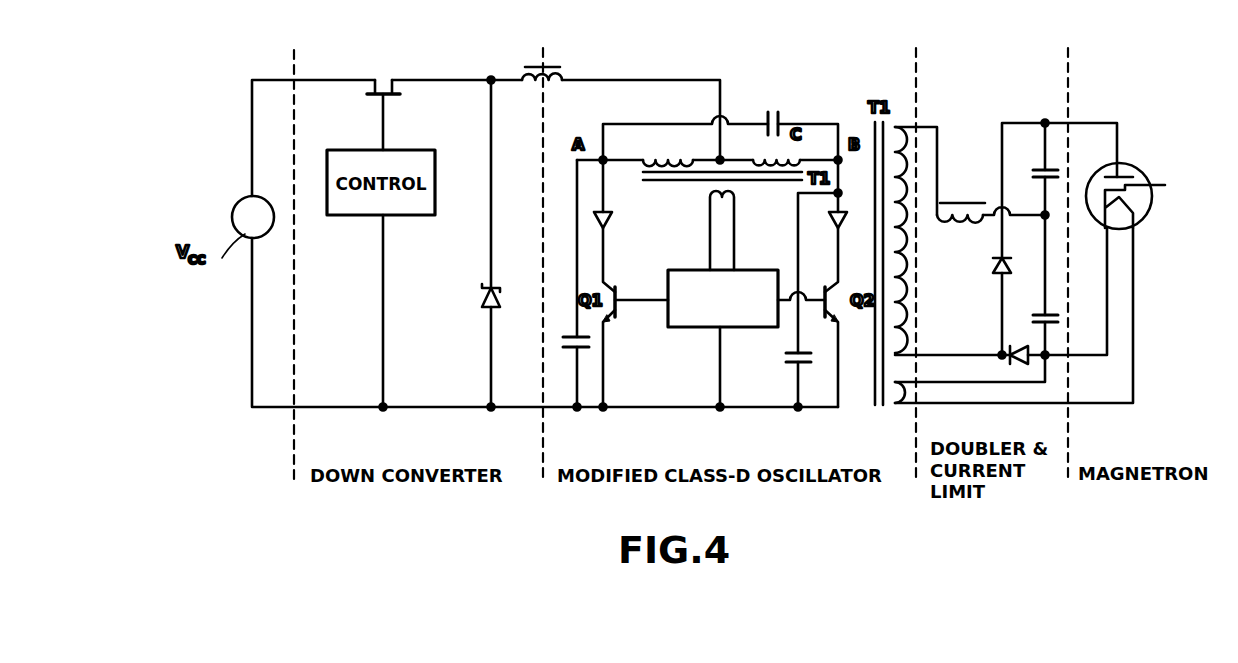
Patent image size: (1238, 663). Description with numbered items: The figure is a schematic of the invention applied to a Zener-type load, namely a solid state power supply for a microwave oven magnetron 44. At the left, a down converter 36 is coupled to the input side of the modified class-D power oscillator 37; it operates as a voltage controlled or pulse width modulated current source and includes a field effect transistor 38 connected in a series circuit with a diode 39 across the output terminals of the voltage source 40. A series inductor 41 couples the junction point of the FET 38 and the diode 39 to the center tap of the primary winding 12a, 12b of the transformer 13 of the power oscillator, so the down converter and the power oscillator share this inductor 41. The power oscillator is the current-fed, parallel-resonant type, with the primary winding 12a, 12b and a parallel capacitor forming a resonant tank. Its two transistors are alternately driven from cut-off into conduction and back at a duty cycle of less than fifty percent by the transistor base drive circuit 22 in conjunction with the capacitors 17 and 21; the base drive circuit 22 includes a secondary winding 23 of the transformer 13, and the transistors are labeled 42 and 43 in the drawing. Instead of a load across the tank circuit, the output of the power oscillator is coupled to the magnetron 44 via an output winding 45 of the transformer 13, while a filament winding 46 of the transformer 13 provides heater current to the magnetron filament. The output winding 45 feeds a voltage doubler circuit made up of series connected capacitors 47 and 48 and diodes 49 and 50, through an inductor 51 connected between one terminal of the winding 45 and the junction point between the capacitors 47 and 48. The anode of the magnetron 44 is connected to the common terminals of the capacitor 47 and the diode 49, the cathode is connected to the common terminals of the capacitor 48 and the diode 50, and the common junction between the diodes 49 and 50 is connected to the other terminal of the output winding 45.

The down converter 36 is at (441, 52).
The modified class-D power oscillator 37 is at (788, 90).
The field effect transistor 38 is at (380, 78).
The diode 39 is at (482, 298).
The voltage source 40 is at (232, 214).
The series inductor 41 is at (548, 68).
The primary winding 12a is at (650, 154).
The primary winding 12b is at (774, 154).
The transformer 13 is at (653, 182).
The capacitor 17 is at (573, 335).
The capacitor 21 is at (790, 353).
The transistor base drive circuit 22 is at (763, 280).
The secondary winding 23 is at (706, 192).
The transistor Q1 42 is at (613, 290).
The transistor Q2 43 is at (830, 290).
The magnetron 44 is at (1141, 170).
The output winding 45 is at (914, 128).
The filament winding 46 is at (904, 406).
The capacitor 47 is at (1040, 168).
The capacitor 48 is at (1041, 313).
The diode 49 is at (993, 268).
The diode 50 is at (1010, 362).
The inductor 51 is at (957, 220).